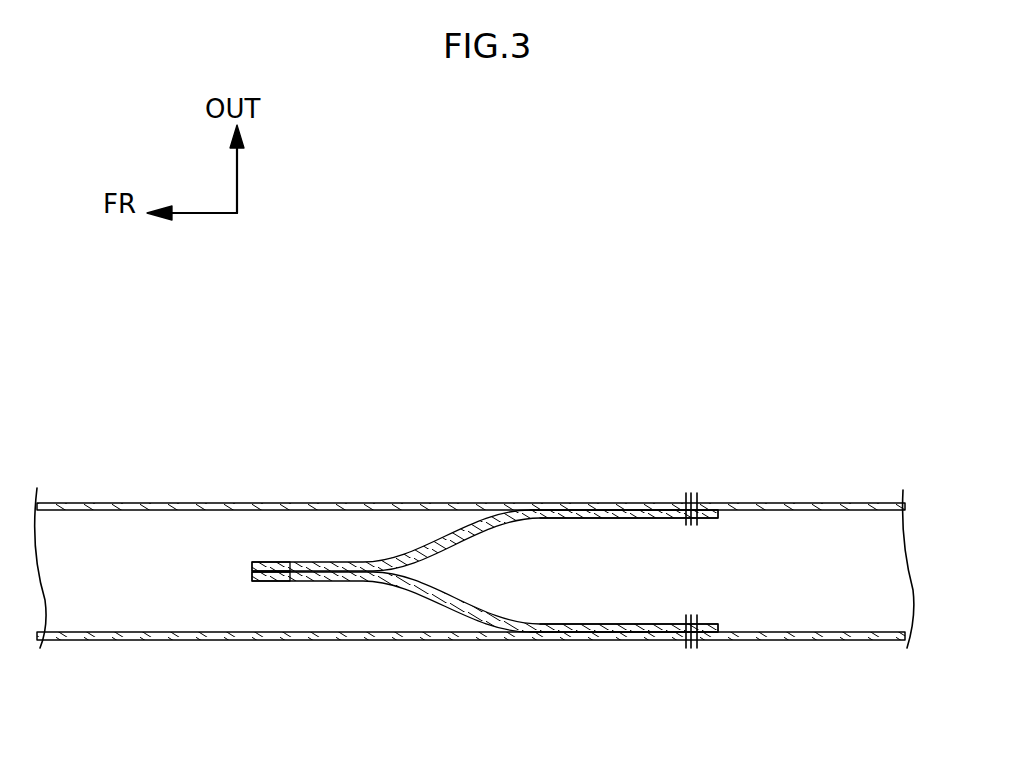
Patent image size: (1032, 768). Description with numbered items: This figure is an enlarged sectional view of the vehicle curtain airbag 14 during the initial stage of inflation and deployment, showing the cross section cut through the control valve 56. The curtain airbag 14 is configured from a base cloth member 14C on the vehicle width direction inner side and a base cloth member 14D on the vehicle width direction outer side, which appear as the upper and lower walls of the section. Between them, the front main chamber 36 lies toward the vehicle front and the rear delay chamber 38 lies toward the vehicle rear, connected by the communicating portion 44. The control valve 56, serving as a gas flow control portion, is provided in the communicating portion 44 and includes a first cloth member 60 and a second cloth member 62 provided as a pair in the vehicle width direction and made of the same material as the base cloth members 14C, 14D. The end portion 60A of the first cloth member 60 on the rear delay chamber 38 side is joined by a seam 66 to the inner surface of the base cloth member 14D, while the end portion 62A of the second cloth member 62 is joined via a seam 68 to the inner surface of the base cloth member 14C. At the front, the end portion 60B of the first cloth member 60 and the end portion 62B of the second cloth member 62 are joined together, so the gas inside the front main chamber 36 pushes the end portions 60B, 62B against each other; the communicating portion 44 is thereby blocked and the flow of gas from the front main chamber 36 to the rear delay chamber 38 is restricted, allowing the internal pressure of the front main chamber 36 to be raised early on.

The curtain airbag 14 is at (110, 457).
The base cloth member 14C is at (402, 641).
The base cloth member 14D is at (388, 502).
The front main chamber 36 is at (137, 572).
The rear delay chamber 38 is at (850, 560).
The communicating portion 44 is at (606, 567).
The control valve 56 is at (358, 547).
The first cloth member 60 is at (453, 532).
The end portion 60A is at (718, 517).
The end portion 60B is at (252, 567).
The second cloth member 62 is at (473, 613).
The end portion 62A is at (718, 628).
The end portion 62B is at (250, 578).
The seam 66 is at (700, 498).
The seam 68 is at (703, 646).